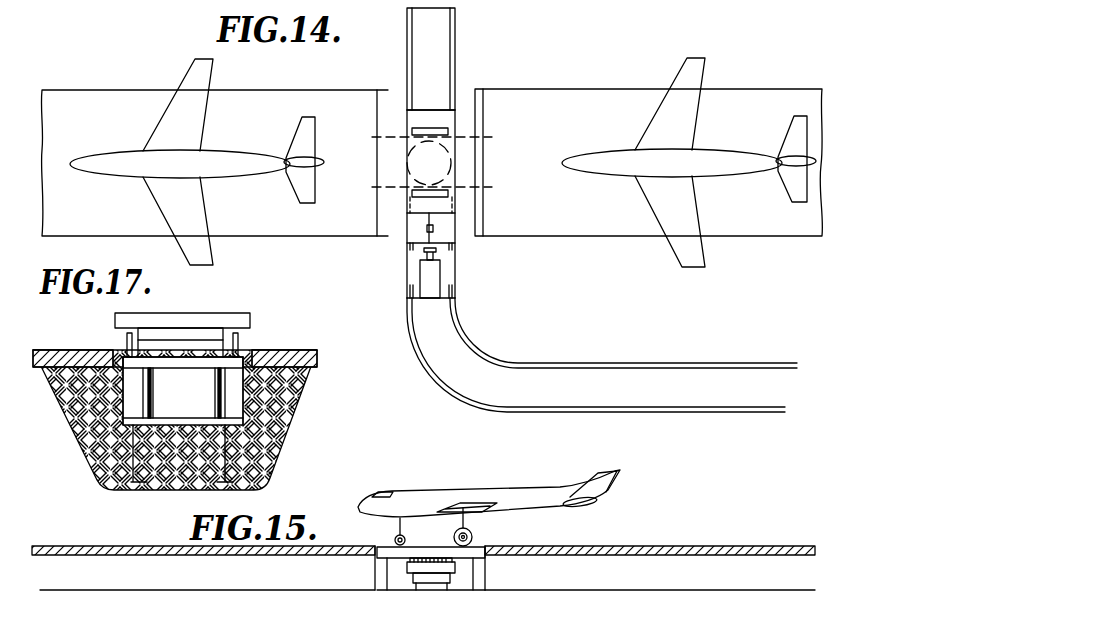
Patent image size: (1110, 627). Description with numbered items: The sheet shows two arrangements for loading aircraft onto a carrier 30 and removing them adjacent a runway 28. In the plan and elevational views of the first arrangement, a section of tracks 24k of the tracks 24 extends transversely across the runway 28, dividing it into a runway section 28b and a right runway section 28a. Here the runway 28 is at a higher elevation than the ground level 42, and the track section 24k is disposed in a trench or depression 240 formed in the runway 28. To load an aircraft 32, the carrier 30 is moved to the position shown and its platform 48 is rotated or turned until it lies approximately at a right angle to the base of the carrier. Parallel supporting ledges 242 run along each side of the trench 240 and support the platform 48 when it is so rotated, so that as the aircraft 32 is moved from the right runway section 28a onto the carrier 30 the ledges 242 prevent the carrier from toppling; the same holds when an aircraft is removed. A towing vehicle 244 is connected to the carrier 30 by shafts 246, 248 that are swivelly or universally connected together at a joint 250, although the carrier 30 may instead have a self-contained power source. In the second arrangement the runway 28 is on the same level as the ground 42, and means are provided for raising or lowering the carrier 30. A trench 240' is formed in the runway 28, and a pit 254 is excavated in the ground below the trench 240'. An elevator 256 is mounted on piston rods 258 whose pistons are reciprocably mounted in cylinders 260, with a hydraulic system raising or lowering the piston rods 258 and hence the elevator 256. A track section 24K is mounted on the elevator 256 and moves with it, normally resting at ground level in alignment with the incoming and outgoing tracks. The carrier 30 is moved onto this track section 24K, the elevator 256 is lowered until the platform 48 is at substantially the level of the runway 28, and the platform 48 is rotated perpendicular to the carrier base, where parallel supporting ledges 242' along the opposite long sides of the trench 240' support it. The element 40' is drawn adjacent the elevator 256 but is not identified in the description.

In FIG. 14, the tracks 24 is at (624, 361).
In FIG. 14, the track section 24k is at (455, 62).
In FIG. 17, the track section 24K is at (220, 350).
In FIG. 14, the runway 28 is at (431, 168).
In FIG. 17, the runway 28 is at (50, 349).
In FIG. 15, the runway 28 is at (62, 546).
In FIG. 14, the right runway section 28a is at (570, 131).
In FIG. 14, the runway section 28b is at (224, 141).
In FIG. 14, the carrier 30 is at (400, 203).
In FIG. 17, the carrier 30 is at (110, 319).
In FIG. 15, the carrier 30 is at (465, 580).
In FIG. 14, the aircraft 32 is at (117, 160).
In FIG. 17, the drive motor 40' is at (258, 322).
In FIG. 15, the ground level 42 is at (104, 590).
In FIG. 14, the platform 48 is at (452, 112).
In FIG. 17, the platform 48 is at (188, 318).
In FIG. 15, the platform 48 is at (473, 553).
In FIG. 14, the trench 240 is at (423, 121).
In FIG. 15, the trench 240 is at (404, 575).
In FIG. 17, the trench 240' is at (238, 419).
In FIG. 14, the supporting ledges 242 is at (435, 162).
In FIG. 15, the supporting ledges 242 is at (438, 581).
In FIG. 17, the supporting ledges 242' is at (191, 407).
In FIG. 14, the towing vehicle 244 is at (456, 273).
In FIG. 14, the shaft 246 is at (426, 228).
In FIG. 14, the shaft 248 is at (424, 242).
In FIG. 14, the joint 250 is at (436, 231).
In FIG. 17, the pit 254 is at (167, 407).
In FIG. 17, the elevator 256 is at (131, 333).
In FIG. 17, the piston rods 258 is at (145, 423).
In FIG. 17, the cylinders 260 is at (112, 473).